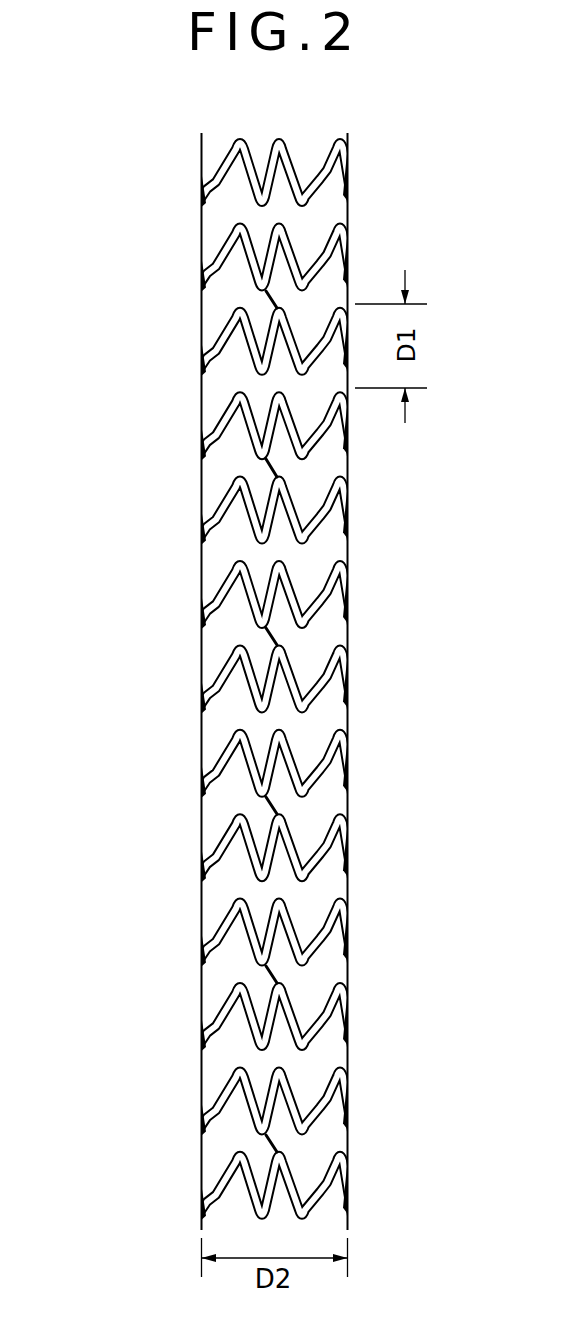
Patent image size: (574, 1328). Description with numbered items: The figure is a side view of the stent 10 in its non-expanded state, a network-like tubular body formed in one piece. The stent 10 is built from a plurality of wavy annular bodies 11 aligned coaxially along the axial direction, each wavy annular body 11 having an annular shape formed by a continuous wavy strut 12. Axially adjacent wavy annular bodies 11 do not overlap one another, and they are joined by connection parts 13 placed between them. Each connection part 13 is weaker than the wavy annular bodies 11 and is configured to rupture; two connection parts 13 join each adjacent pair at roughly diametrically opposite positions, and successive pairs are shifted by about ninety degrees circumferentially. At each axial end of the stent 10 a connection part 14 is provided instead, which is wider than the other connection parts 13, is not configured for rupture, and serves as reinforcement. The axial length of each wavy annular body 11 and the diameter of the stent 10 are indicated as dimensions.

The stent 10 is at (116, 152).
The wavy annular body 11 is at (275, 639).
The wavy strut 12 is at (275, 681).
The connection part 13 is at (267, 468).
The connection part 14 is at (270, 1142).